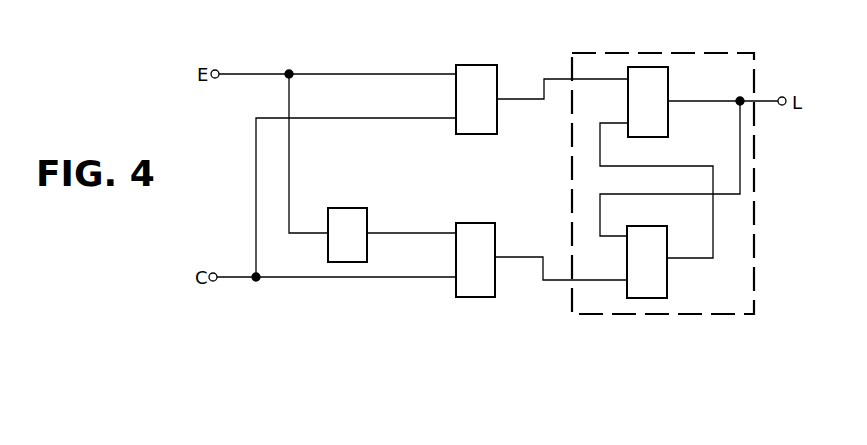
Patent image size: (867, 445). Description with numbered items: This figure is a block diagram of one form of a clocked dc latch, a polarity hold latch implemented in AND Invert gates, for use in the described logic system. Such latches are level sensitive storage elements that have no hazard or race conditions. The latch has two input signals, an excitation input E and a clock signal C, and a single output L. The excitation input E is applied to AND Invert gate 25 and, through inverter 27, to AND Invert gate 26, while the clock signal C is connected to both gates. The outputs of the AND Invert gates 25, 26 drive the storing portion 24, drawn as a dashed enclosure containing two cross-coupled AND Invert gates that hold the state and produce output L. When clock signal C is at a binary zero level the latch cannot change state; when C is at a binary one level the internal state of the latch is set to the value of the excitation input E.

The storing portion 24 is at (756, 217).
The AND Invert gate 25 is at (485, 66).
The AND Invert gate 26 is at (484, 222).
The inverter 27 is at (355, 207).